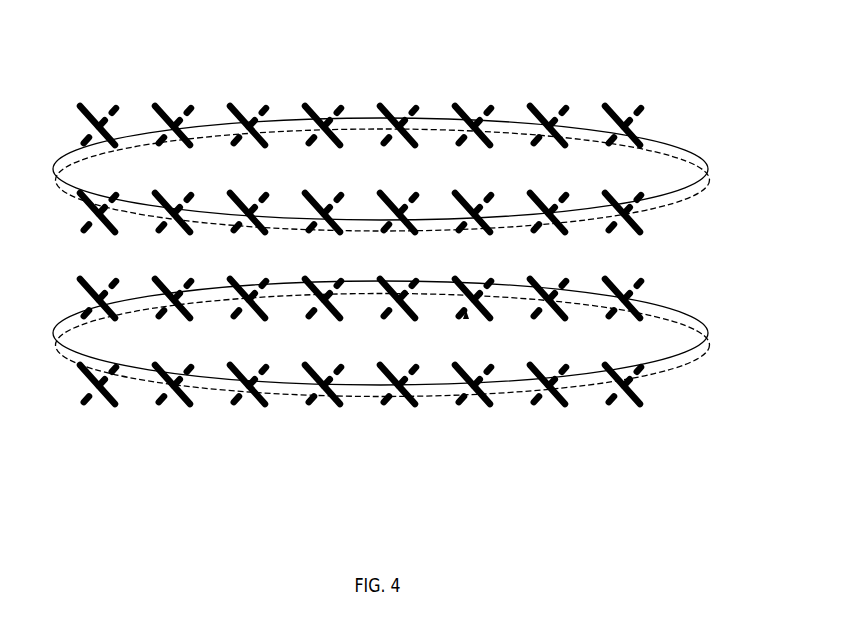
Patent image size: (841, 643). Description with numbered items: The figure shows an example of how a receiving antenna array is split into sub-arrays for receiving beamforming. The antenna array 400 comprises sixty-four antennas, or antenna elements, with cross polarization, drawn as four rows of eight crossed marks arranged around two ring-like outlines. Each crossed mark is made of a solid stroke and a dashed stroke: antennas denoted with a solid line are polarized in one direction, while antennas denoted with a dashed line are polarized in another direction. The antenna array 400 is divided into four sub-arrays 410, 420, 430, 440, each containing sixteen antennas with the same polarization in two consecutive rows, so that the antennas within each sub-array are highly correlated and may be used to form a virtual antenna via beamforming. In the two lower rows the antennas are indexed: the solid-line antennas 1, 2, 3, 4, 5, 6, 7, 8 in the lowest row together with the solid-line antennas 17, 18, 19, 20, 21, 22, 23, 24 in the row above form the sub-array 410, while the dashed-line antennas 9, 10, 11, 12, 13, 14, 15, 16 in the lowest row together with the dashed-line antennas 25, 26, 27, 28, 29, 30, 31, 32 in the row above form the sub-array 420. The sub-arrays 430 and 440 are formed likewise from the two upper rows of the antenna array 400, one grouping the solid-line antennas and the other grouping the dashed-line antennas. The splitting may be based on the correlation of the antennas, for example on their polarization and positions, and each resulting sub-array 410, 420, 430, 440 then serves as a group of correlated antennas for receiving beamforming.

The antenna array 400 is at (606, 471).
The sub-array 410 is at (287, 410).
The sub-array 420 is at (515, 396).
The sub-array 430 is at (507, 111).
The sub-array 440 is at (214, 124).
The antenna 1 is at (93, 396).
The antenna 2 is at (166, 396).
The antenna 3 is at (242, 396).
The antenna 4 is at (319, 398).
The antenna 5 is at (394, 398).
The antenna 6 is at (465, 398).
The antenna 7 is at (545, 400).
The antenna 8 is at (619, 398).
The antenna 9 is at (100, 399).
The antenna 10 is at (177, 399).
The antenna 11 is at (252, 399).
The antenna 12 is at (329, 399).
The antenna 13 is at (403, 399).
The antenna 14 is at (475, 400).
The antenna 15 is at (552, 400).
The antenna 16 is at (628, 401).
The antenna 17 is at (104, 287).
The antenna 18 is at (167, 312).
The antenna 19 is at (241, 312).
The antenna 20 is at (318, 312).
The antenna 21 is at (392, 312).
The antenna 22 is at (469, 312).
The antenna 23 is at (542, 312).
The antenna 24 is at (616, 312).
The antenna 25 is at (103, 313).
The antenna 26 is at (180, 313).
The antenna 27 is at (254, 313).
The antenna 28 is at (329, 313).
The antenna 29 is at (404, 313).
The antenna 30 is at (480, 313).
The antenna 31 is at (554, 313).
The antenna 32 is at (628, 313).